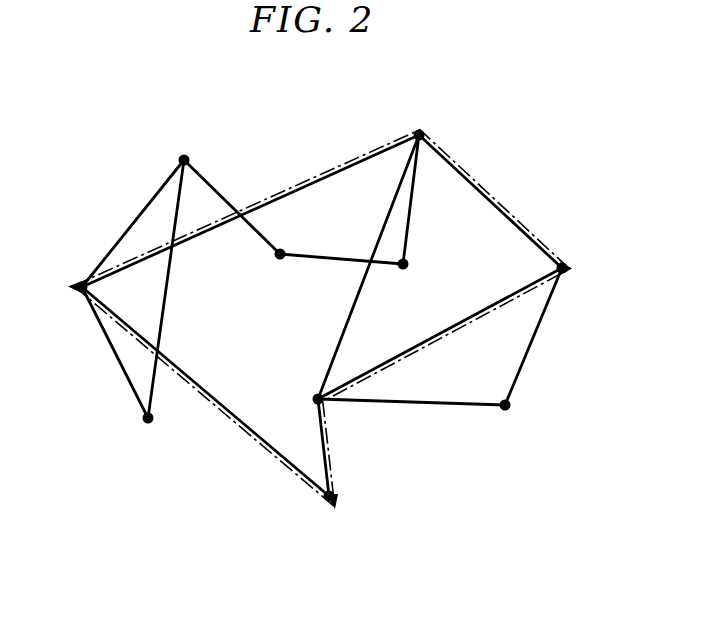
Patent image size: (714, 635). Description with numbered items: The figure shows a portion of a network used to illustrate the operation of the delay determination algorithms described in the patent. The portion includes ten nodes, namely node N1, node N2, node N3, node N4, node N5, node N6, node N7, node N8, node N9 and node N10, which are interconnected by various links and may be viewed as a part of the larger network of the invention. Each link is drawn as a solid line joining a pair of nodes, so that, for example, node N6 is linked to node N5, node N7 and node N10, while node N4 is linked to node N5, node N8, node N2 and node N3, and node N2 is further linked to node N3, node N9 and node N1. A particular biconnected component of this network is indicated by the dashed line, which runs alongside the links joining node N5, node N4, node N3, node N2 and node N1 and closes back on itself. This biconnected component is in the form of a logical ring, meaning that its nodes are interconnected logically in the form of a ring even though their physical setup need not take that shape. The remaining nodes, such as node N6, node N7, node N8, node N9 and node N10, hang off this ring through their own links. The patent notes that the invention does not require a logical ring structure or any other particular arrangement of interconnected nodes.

The node N1 is at (336, 520).
The node N2 is at (303, 400).
The node N3 is at (583, 273).
The node N4 is at (420, 117).
The node N5 is at (63, 284).
The node N6 is at (185, 144).
The node N7 is at (267, 266).
The node N8 is at (418, 273).
The node N9 is at (520, 416).
The node N10 is at (152, 436).